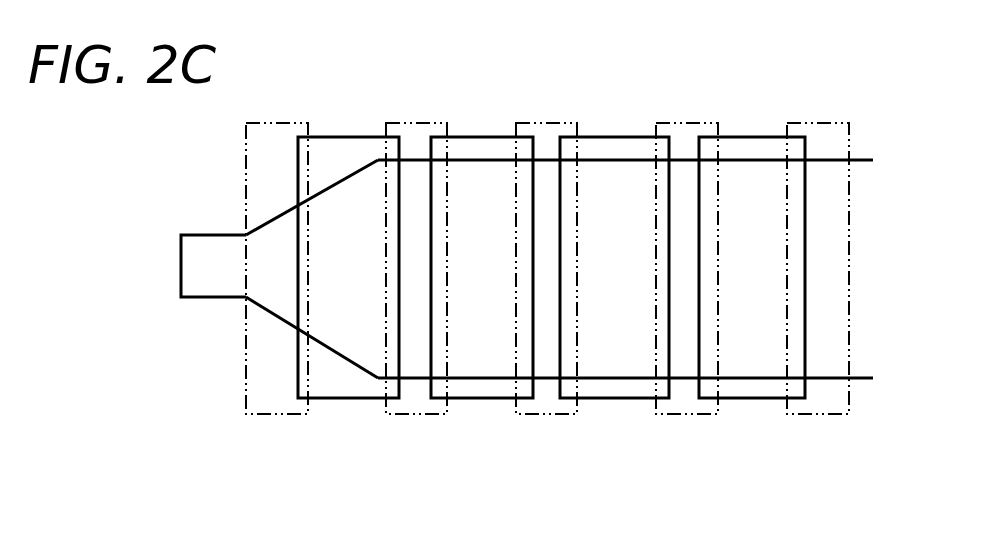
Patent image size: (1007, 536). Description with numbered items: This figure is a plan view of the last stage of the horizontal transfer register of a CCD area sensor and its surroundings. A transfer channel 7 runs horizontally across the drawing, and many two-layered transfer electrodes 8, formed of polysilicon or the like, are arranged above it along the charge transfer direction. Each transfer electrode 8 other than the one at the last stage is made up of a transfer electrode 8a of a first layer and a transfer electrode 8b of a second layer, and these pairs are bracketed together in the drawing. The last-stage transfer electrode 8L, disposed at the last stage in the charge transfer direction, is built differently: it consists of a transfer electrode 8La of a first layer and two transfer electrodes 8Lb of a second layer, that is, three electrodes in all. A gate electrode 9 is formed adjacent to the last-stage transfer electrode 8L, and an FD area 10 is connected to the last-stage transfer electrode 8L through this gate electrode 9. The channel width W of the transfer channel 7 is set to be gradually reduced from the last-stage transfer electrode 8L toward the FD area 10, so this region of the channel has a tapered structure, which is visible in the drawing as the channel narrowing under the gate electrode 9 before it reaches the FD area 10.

The transfer channel 7 is at (752, 160).
The transfer electrode 8 is at (560, 472).
The transfer electrode of a first layer 8a is at (552, 415).
The transfer electrode of a second layer 8b is at (611, 399).
The last-stage transfer electrode 8L is at (523, 470).
The transfer electrode of a first layer 8La is at (417, 413).
The transfer electrodes of a second layer 8Lb is at (342, 399).
The gate electrode 9 is at (288, 413).
The FD area 10 is at (213, 298).
The channel width W is at (620, 163).